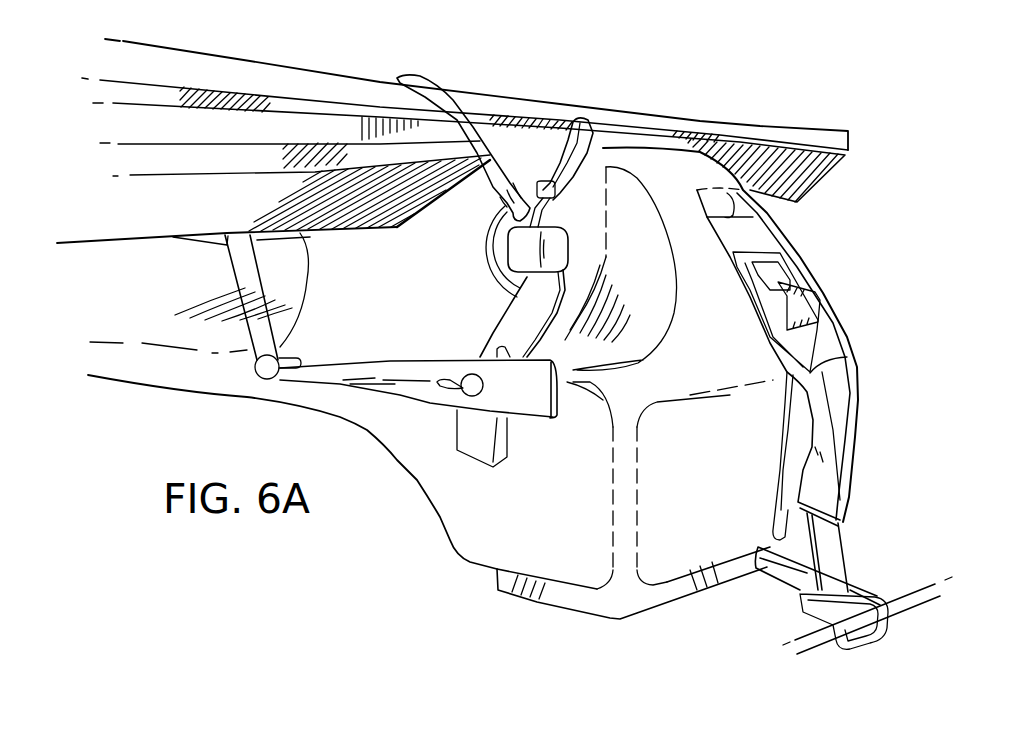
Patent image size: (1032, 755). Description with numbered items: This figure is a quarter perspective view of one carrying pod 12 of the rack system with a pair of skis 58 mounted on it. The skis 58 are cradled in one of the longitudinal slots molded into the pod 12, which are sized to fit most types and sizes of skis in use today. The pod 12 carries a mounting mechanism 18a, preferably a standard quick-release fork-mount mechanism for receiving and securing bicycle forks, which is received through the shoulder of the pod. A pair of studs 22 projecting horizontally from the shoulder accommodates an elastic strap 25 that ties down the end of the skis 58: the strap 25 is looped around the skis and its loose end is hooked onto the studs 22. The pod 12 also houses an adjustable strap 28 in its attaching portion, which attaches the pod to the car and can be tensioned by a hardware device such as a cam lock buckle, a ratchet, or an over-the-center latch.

The skis 58 is at (287, 71).
The elastic strap 25 is at (447, 88).
The mounting mechanism 18a is at (523, 250).
The studs 22 is at (472, 378).
The pod 12 is at (805, 257).
The adjustable strap 28 is at (803, 430).